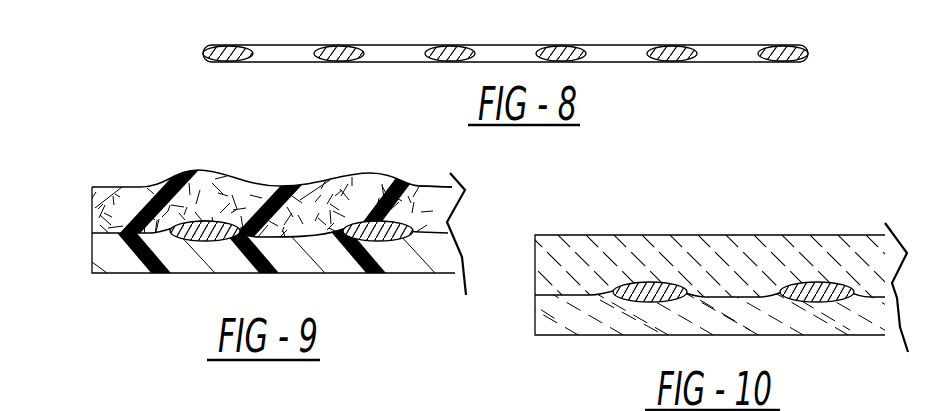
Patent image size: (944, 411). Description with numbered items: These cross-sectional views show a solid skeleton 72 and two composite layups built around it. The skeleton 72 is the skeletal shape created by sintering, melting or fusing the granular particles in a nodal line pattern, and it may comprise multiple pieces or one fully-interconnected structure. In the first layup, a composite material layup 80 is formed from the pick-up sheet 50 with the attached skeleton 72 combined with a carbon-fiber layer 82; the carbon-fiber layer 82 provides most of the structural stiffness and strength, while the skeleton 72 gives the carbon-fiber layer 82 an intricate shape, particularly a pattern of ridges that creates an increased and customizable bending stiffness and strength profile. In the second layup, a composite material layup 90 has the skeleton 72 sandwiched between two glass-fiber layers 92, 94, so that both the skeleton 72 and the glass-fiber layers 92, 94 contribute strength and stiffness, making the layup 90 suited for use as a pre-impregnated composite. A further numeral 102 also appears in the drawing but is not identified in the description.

In FIG. 9, the pick-up sheet 50 is at (437, 258).
In FIG. 8, the solid skeleton 72 is at (792, 47).
In FIG. 9, the solid skeleton 72 is at (207, 236).
In FIG. 10, the solid skeleton 72 is at (833, 302).
In FIG. 9, the composite material layup 80 is at (172, 166).
In FIG. 9, the carbon-fiber layer 82 is at (437, 212).
In FIG. 10, the composite material layup 90 is at (861, 204).
In FIG. 10, the glass-fiber layer 92 is at (587, 323).
In FIG. 10, the glass-fiber layer 94 is at (771, 257).
In FIG. 9, the component 102 is at (388, 402).